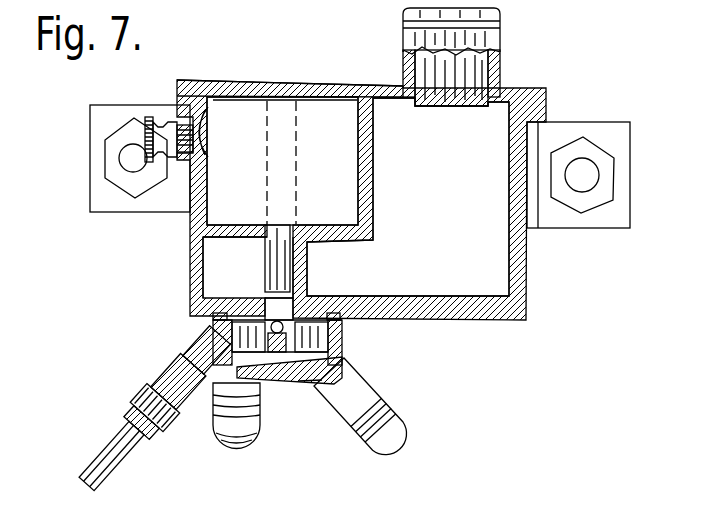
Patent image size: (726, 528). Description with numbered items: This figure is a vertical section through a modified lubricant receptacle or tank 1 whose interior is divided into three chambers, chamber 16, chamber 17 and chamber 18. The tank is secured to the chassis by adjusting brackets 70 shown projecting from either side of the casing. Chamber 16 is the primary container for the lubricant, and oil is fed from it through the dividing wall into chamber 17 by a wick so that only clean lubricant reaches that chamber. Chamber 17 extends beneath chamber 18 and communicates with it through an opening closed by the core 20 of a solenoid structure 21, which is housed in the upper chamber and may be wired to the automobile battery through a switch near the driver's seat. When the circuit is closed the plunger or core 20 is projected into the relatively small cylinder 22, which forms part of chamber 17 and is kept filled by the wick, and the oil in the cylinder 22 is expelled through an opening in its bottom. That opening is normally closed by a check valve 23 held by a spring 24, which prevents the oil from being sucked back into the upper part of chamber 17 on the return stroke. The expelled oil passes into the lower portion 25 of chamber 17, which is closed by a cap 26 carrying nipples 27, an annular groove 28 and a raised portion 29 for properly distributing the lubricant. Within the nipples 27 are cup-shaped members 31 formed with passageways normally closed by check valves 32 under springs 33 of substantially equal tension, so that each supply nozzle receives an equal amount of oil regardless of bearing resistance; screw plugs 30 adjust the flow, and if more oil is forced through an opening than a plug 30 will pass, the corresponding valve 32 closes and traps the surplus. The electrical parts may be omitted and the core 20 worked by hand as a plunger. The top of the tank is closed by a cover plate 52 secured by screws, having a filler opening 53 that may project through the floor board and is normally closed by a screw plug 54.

The casing 1 is at (548, 97).
The chamber 16 is at (477, 140).
The chamber 17 is at (222, 278).
The chamber 18 is at (351, 86).
The core 20 is at (270, 253).
The solenoid structure 21 is at (332, 176).
The cylinder 22 is at (283, 312).
The valve 23 is at (214, 333).
The spring 24 is at (277, 353).
The lower portion of chamber 25 is at (310, 340).
The cap 26 is at (213, 340).
The nipples 27 is at (178, 383).
The annular groove 28 is at (346, 359).
The raised portion 29 is at (310, 384).
The screw plugs 30 is at (180, 443).
The cup-shaped members 31 is at (223, 438).
The valves 32 is at (155, 392).
The springs 33 is at (130, 422).
The cover plate 52 is at (291, 88).
The filler opening 53 is at (452, 68).
The screw plug 54 is at (405, 13).
The adjusting brackets 70 is at (103, 187).